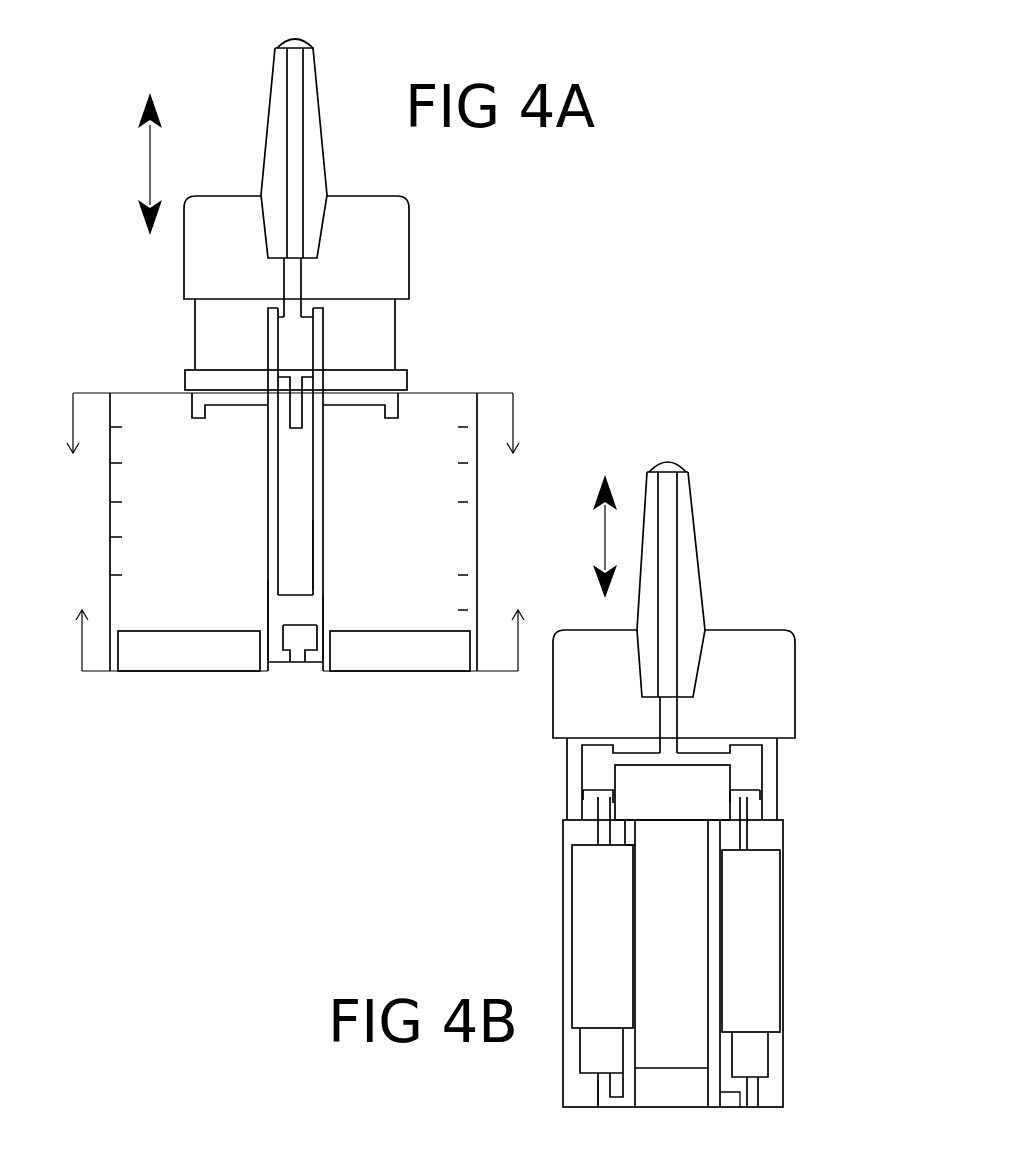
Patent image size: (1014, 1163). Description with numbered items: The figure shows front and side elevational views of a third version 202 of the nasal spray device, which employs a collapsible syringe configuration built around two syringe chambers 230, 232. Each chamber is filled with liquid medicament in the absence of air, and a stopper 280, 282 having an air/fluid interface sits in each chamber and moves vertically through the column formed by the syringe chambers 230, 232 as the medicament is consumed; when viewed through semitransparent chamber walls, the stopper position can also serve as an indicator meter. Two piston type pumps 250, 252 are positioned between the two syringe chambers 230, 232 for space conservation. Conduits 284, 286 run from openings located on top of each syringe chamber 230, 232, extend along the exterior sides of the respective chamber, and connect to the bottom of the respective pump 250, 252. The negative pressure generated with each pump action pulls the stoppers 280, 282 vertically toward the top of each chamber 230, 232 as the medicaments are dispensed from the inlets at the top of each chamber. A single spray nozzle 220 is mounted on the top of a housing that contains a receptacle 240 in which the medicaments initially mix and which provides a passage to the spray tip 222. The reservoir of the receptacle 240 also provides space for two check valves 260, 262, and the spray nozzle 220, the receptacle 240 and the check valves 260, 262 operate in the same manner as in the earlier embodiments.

In FIG. 4A, the third version 202 is at (160, 307).
In FIG. 4B, the third version 202 is at (710, 437).
In FIG. 4A, the spray nozzle 220 is at (370, 242).
In FIG. 4B, the spray nozzle 220 is at (758, 648).
In FIG. 4A, the spray tip 222 is at (268, 158).
In FIG. 4B, the spray tip 222 is at (688, 547).
In FIG. 4A, the syringe chamber 230 is at (190, 562).
In FIG. 4B, the syringe chamber 230 is at (672, 987).
In FIG. 4A, the syringe chamber 232 is at (420, 543).
In FIG. 4B, the receptacle 240 is at (727, 762).
In FIG. 4B, the pump 250 is at (597, 942).
In FIG. 4A, the pump 252 is at (305, 517).
In FIG. 4B, the pump 252 is at (742, 922).
In FIG. 4B, the check valve 260 is at (583, 803).
In FIG. 4B, the check valve 262 is at (747, 803).
In FIG. 4A, the stopper 280 is at (160, 652).
In FIG. 4A, the stopper 282 is at (370, 655).
In FIG. 4A, the conduit 284 is at (272, 577).
In FIG. 4B, the conduit 284 is at (630, 1082).
In FIG. 4A, the conduit 286 is at (320, 595).
In FIG. 4B, the conduit 286 is at (720, 1105).